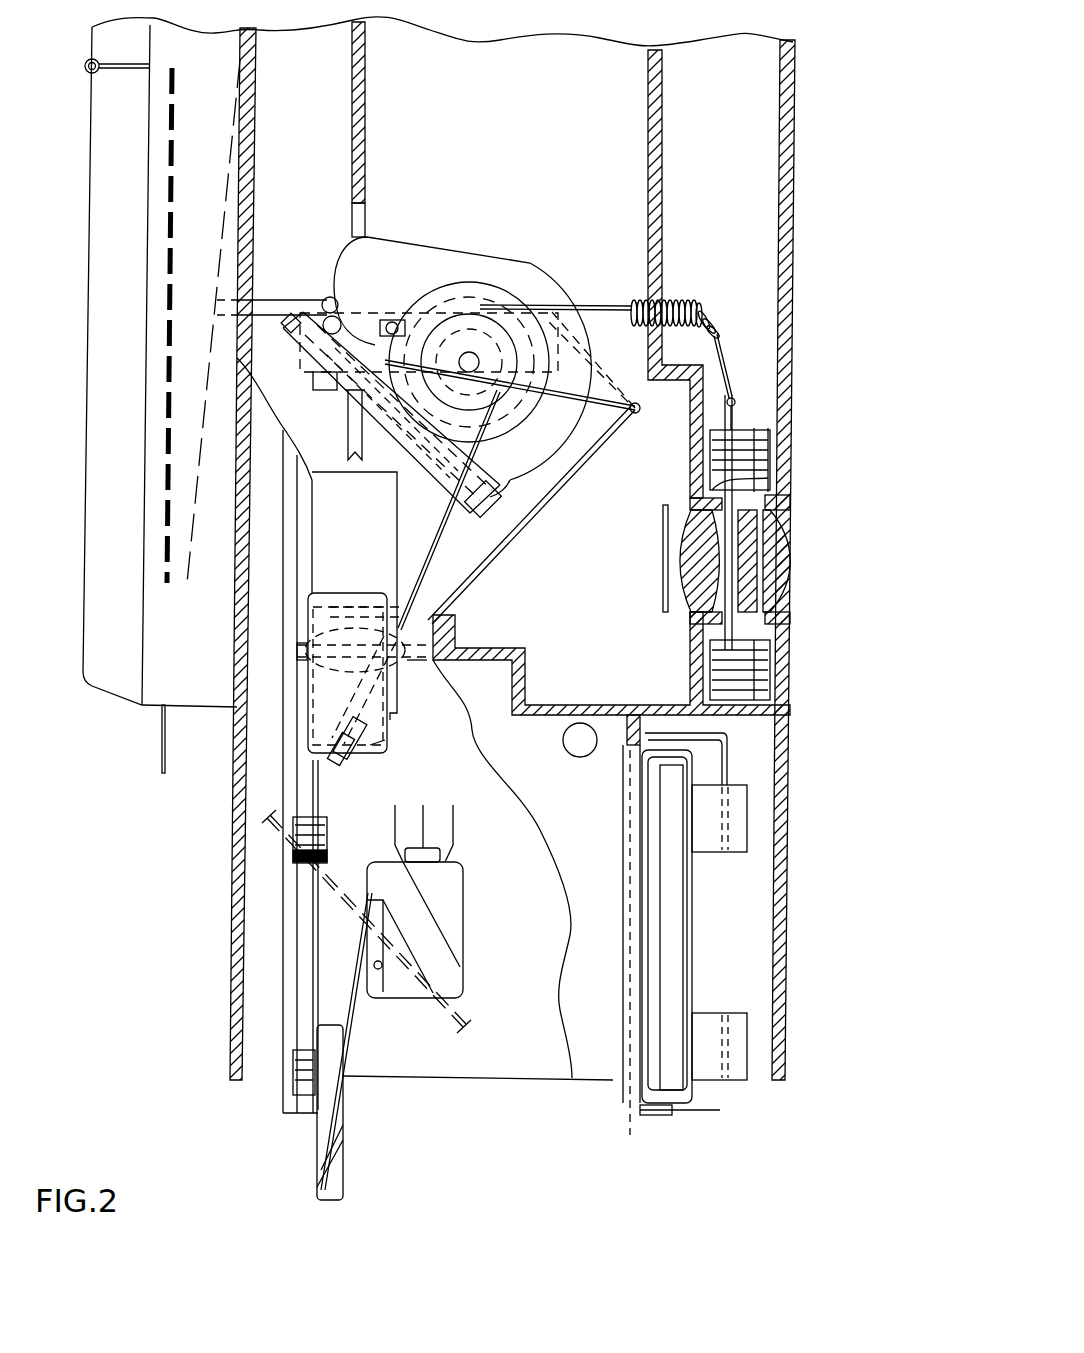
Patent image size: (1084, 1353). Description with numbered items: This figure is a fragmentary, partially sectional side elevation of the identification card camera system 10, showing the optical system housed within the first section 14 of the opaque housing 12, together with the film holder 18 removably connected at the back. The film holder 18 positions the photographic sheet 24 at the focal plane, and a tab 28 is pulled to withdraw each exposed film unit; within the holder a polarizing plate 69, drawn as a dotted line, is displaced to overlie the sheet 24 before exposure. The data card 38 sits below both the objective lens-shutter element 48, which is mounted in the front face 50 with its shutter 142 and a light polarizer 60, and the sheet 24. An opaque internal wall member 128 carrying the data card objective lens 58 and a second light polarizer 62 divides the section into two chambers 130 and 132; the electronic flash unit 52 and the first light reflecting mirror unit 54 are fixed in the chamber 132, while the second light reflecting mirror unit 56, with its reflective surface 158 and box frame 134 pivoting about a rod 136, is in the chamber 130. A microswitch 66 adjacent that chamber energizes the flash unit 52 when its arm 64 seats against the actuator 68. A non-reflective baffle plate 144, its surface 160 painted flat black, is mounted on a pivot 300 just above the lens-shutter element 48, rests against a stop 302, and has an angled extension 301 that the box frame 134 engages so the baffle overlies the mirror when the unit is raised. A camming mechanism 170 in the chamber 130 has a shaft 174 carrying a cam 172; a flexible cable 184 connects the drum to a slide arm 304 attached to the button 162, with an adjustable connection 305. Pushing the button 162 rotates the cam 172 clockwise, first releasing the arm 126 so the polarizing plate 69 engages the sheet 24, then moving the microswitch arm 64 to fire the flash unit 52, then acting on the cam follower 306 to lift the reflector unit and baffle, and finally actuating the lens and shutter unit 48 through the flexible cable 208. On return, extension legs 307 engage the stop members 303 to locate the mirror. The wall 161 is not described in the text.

The camera system 10 is at (236, 914).
The opaque housing 12 is at (788, 98).
The first section 14 is at (790, 131).
The film holder 18 is at (92, 300).
The photographic sheet 24 is at (168, 196).
The tab 28 is at (162, 760).
The data card 38 is at (648, 865).
The objective lens-shutter element 48 is at (765, 486).
The front face 50 is at (792, 232).
The electronic flash unit 52 is at (563, 742).
The first light reflecting mirror unit 54 is at (462, 1015).
The second light reflecting mirror unit 56 is at (505, 538).
The objective lens 58 is at (405, 665).
The light polarizer 60 is at (662, 560).
The second light polarizer 62 is at (417, 612).
The microswitch arm 64 is at (355, 1062).
The microswitch 66 is at (462, 900).
The actuator 68 is at (378, 970).
The polarizing plate 69 is at (235, 118).
The arm 126 is at (330, 296).
The internal wall member 128 is at (512, 650).
The chamber 130 is at (628, 640).
The chamber 132 is at (603, 822).
The box frame 134 is at (512, 482).
The rod 136 is at (300, 350).
The shutter 142 is at (740, 570).
The baffle plate 144 is at (478, 578).
The reflective surface 158 is at (385, 422).
The surface 160 is at (595, 450).
The partition wall 161 is at (655, 238).
The button 162 is at (338, 593).
The camming mechanism 170 is at (420, 246).
The cam 172 is at (543, 275).
The shaft 174 is at (470, 352).
The flexible cable 184 is at (468, 512).
The flexible cable 208 is at (716, 335).
The pivot 300 is at (640, 414).
The angled extension 301 is at (598, 395).
The stop 302 is at (455, 625).
The stop members 303 is at (308, 385).
The slide arm 304 is at (310, 990).
The adjustable connection 305 is at (370, 755).
The cam follower 306 is at (393, 322).
The extension legs 307 is at (410, 478).